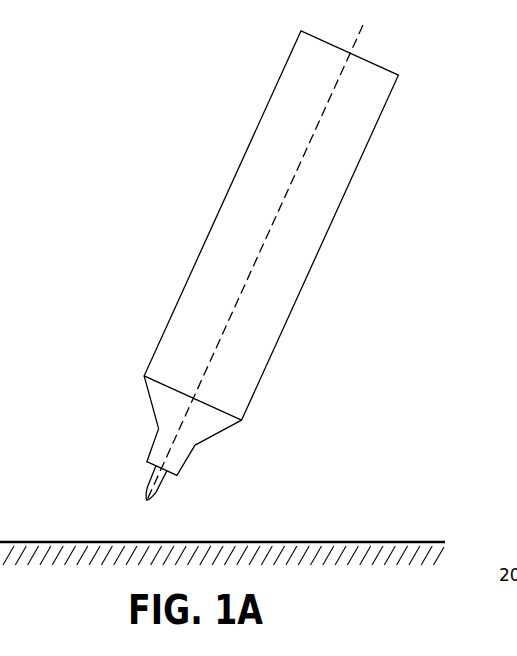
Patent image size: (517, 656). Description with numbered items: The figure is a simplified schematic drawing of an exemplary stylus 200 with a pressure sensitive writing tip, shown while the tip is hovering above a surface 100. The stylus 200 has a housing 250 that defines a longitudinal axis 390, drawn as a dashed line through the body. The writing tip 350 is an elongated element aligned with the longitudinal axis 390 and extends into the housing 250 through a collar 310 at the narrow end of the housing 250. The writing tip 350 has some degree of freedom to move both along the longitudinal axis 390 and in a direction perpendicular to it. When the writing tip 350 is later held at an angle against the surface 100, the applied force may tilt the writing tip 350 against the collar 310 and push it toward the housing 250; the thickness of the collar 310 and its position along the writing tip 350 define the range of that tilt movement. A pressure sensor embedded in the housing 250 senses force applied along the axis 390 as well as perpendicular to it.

The surface 100 is at (322, 541).
The stylus 200 is at (229, 87).
The housing 250 is at (152, 405).
The collar 310 is at (173, 476).
The writing tip 350 is at (153, 475).
The longitudinal axis 390 is at (313, 134).